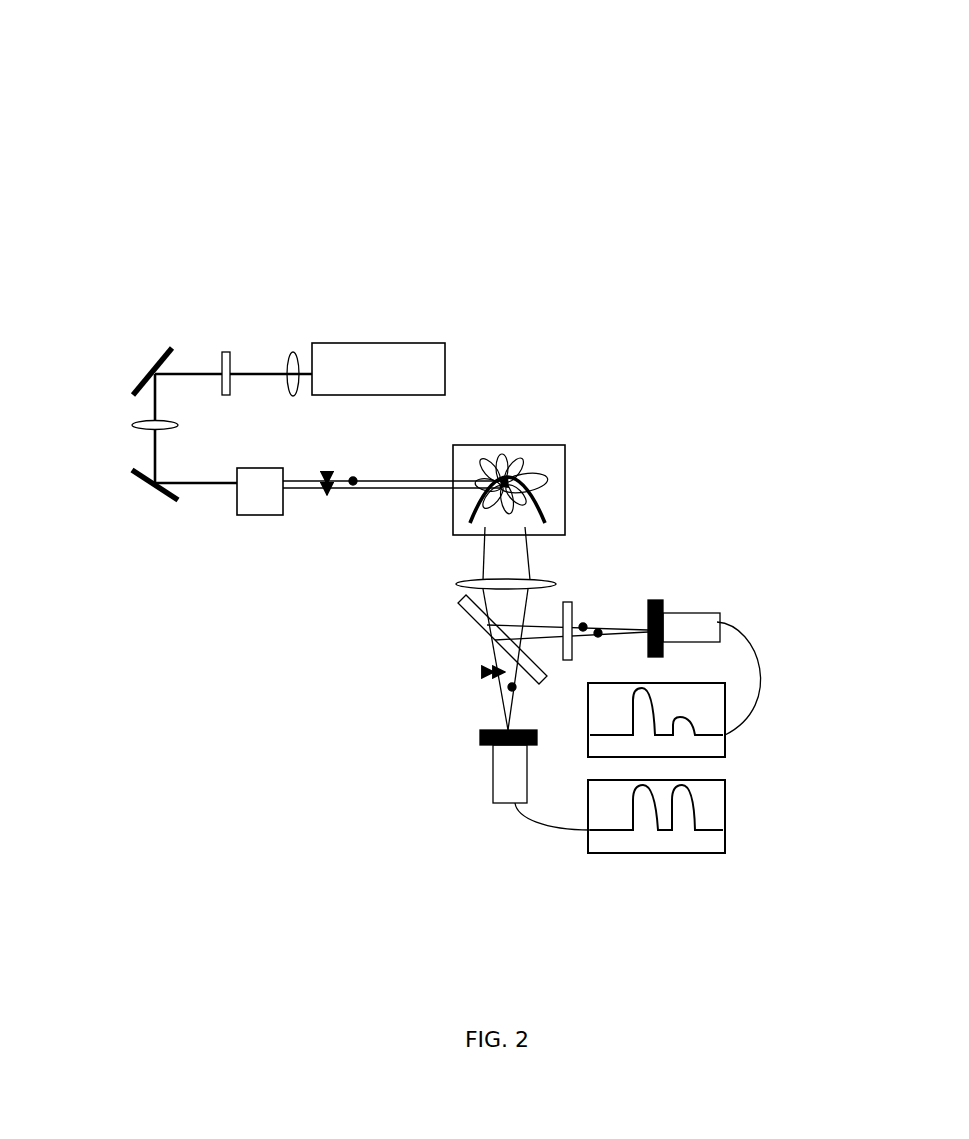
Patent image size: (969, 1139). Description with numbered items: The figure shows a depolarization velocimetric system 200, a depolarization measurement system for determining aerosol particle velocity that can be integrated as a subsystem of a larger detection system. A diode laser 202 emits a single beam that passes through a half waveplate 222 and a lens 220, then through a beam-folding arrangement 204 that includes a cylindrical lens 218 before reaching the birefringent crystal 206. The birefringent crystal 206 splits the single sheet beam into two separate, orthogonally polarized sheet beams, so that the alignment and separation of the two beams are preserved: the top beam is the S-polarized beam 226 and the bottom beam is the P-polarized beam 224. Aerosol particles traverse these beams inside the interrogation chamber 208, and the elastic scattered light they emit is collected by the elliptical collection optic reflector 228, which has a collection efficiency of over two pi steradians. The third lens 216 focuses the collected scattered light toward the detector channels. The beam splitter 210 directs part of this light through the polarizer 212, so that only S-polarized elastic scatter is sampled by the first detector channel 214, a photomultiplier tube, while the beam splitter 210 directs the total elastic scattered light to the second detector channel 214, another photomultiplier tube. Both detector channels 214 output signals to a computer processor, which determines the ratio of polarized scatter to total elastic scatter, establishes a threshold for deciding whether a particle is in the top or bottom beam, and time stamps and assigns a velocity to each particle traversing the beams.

The depolarization velocimetric system 200 is at (429, 434).
The diode laser 202 is at (445, 370).
The mirrors and cylindrical lens assembly 204 is at (130, 480).
The birefringent crystal 206 is at (245, 518).
The interrogation chamber 208 is at (517, 445).
The beam splitter 210 is at (480, 630).
The polarizer 212 is at (573, 600).
The detector channel 214 is at (703, 612).
The third lens 216 is at (473, 578).
The cylindrical lens 218 is at (187, 425).
The lens 220 is at (297, 407).
The half waveplate 222 is at (240, 352).
The P-polarized beam 224 is at (336, 494).
The S-polarized beam 226 is at (353, 481).
The elliptical collection optic reflector 228 is at (553, 511).